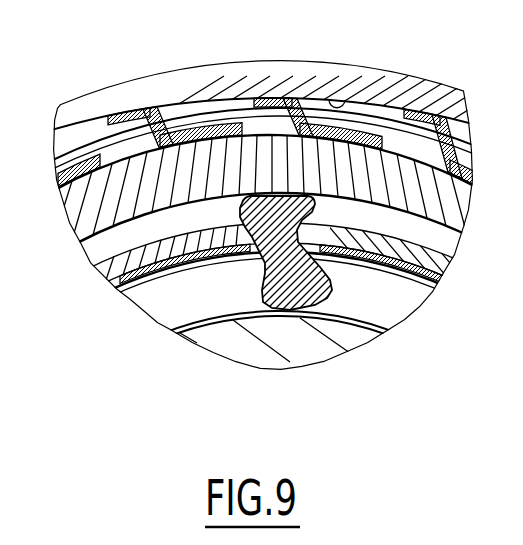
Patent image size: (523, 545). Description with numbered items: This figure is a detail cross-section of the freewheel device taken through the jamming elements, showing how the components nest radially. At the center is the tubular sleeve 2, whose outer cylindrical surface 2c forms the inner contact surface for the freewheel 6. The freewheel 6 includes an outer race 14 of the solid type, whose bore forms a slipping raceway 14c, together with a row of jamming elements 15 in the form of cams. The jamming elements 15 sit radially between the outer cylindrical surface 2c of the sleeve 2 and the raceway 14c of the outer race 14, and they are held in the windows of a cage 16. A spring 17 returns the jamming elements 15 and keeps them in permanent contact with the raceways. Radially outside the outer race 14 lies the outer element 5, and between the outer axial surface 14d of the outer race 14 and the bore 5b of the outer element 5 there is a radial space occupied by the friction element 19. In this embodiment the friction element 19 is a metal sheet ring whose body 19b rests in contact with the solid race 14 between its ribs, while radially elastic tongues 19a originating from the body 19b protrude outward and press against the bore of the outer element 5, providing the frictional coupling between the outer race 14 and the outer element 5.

The tubular sleeve 2 is at (311, 343).
The outer cylindrical surface 2c is at (373, 318).
The outer element 5 is at (270, 80).
The bore 5b is at (338, 103).
The freewheel 6 is at (240, 266).
The outer race 14 is at (98, 212).
The slipping raceway 14c is at (117, 261).
The outer axial surface 14d is at (100, 155).
The jamming elements 15 is at (284, 302).
The cage 16 is at (438, 262).
The spring 17 is at (118, 284).
The friction element 19 is at (160, 122).
The radially elastic tongues 19a is at (120, 118).
The body 19b is at (200, 128).